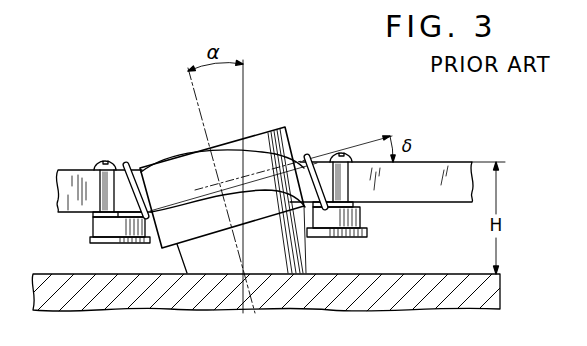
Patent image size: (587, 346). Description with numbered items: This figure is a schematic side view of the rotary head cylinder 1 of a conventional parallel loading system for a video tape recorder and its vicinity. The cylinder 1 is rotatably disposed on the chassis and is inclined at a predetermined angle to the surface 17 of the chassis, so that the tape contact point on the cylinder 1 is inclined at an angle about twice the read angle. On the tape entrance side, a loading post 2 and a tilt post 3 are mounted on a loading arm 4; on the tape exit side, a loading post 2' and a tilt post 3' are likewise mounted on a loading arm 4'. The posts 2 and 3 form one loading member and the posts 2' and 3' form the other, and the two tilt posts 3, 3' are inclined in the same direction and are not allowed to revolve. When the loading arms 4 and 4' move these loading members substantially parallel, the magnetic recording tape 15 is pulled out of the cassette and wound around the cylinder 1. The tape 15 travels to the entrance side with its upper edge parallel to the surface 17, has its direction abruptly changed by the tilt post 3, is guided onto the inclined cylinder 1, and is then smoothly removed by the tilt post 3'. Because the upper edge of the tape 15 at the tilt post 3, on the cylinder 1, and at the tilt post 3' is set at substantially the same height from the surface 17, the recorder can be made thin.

The rotary head cylinder 1 is at (262, 134).
The loading post 2 is at (97, 167).
The loading post 2' is at (362, 194).
The tilt post 3 is at (134, 169).
The tilt post 3' is at (314, 157).
The loading arm 4 is at (104, 239).
The loading arm 4' is at (337, 234).
The magnetic recording tape 15 is at (460, 170).
The surface of the chassis 17 is at (432, 273).